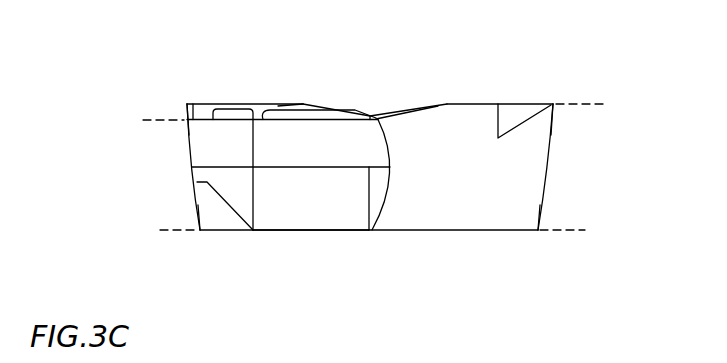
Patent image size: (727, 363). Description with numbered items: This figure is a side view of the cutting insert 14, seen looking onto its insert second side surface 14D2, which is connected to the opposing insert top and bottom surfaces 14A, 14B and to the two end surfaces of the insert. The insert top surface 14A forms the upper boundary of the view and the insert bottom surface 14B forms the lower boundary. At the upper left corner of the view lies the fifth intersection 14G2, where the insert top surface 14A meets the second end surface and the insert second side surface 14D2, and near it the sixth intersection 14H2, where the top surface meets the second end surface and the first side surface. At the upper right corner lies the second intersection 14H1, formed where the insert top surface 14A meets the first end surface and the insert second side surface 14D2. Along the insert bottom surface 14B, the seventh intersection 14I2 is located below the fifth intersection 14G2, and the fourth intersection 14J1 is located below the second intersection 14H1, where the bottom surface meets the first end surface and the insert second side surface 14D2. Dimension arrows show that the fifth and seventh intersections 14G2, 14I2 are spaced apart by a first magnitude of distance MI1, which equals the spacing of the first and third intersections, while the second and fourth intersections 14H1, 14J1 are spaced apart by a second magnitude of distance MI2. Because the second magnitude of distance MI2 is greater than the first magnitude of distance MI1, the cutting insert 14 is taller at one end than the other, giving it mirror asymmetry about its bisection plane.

The cutting insert 14 is at (519, 75).
The insert top surface 14A is at (298, 103).
The insert bottom surface 14B is at (294, 231).
The insert second side surface 14D2 is at (497, 188).
The fifth intersection 14G2 is at (184, 120).
The sixth intersection 14H2 is at (186, 106).
The second intersection 14H1 is at (554, 103).
The seventh intersection 14I2 is at (200, 231).
The fourth intersection 14J1 is at (538, 230).
The first magnitude of distance MI1 is at (168, 120).
The second magnitude of distance MI2 is at (577, 105).